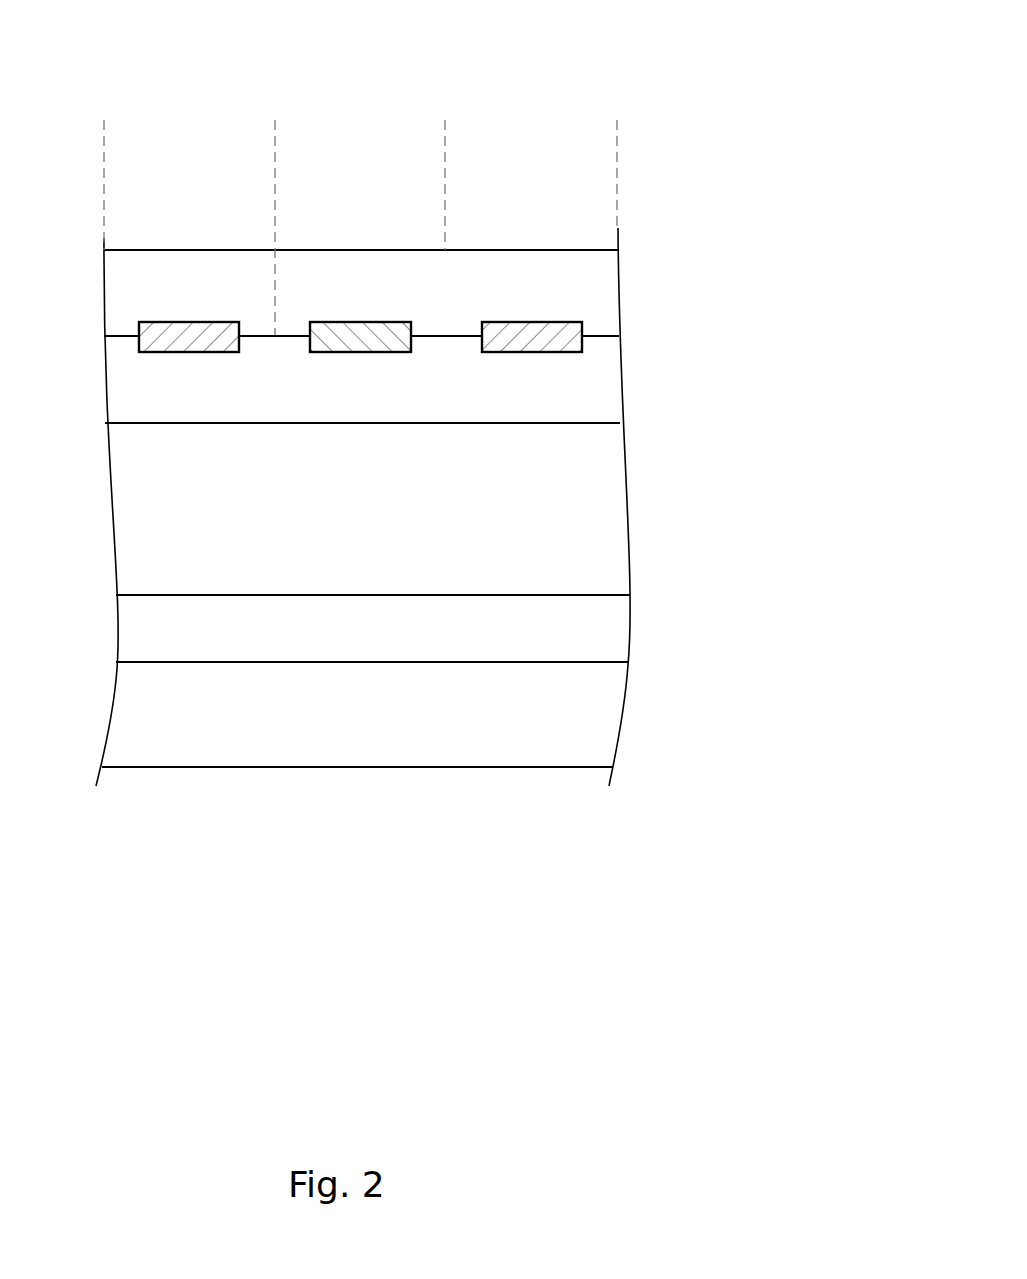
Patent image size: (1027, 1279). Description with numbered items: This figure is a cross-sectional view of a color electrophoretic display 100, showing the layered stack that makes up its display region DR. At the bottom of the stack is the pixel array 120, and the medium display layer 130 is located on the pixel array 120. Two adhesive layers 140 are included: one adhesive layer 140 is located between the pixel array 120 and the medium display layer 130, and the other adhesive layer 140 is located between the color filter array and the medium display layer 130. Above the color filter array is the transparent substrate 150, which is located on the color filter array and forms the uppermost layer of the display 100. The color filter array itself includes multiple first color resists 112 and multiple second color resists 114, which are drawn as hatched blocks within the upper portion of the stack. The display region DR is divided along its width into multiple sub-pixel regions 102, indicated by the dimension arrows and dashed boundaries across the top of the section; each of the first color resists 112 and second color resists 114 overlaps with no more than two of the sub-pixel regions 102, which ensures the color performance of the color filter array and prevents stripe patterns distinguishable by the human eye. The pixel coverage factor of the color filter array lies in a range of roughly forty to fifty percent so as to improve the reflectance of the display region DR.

The color electrophoretic display 100 is at (78, 42).
The display region DR is at (666, 93).
The sub-pixel regions 102 is at (617, 132).
The first color resists 112 is at (195, 338).
The second color resists 114 is at (367, 338).
The transparent substrate 150 is at (612, 297).
The adhesive layers 140 is at (612, 378).
The medium display layer 130 is at (612, 522).
The pixel array 120 is at (612, 725).